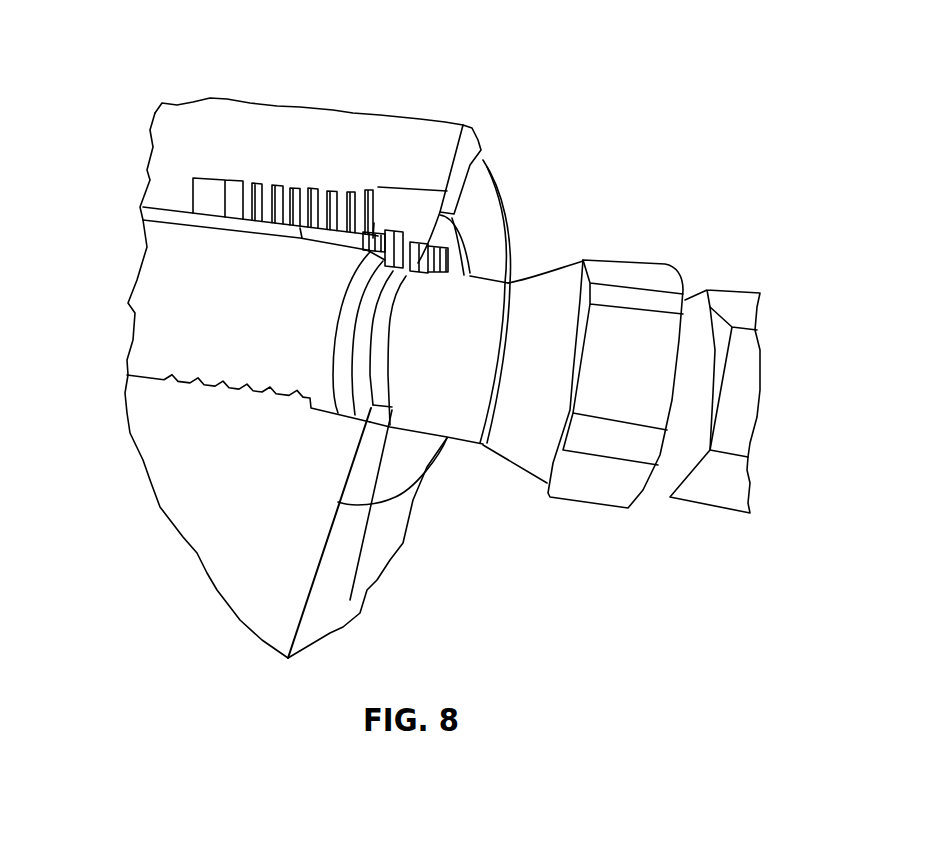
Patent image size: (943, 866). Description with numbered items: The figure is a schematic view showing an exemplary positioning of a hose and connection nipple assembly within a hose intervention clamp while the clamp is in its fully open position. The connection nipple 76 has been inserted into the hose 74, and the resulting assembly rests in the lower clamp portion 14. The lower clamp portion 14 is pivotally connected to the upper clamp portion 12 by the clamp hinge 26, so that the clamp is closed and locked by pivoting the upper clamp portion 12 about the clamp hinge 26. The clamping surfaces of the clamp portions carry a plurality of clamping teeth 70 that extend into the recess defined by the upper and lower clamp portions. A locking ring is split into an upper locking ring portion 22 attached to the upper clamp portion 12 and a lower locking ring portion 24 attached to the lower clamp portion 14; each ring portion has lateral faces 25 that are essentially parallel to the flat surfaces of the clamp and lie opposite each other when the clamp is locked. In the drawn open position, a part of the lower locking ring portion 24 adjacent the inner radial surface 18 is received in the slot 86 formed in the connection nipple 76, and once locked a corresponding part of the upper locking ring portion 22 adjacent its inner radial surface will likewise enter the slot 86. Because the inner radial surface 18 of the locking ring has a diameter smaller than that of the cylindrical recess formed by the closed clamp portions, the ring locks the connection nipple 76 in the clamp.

The upper clamp portion 12 is at (349, 127).
The lower clamp portion 14 is at (270, 558).
The inner radial surface 18 is at (466, 252).
The upper locking ring portion 22 is at (479, 155).
The lower locking ring portion 24 is at (393, 478).
The lateral faces 25 is at (357, 472).
The clamp hinge 26 is at (458, 208).
The clamping teeth 70 is at (240, 197).
The hose 74 is at (157, 303).
The connection nipple 76 is at (473, 410).
The slot 86 is at (407, 282).